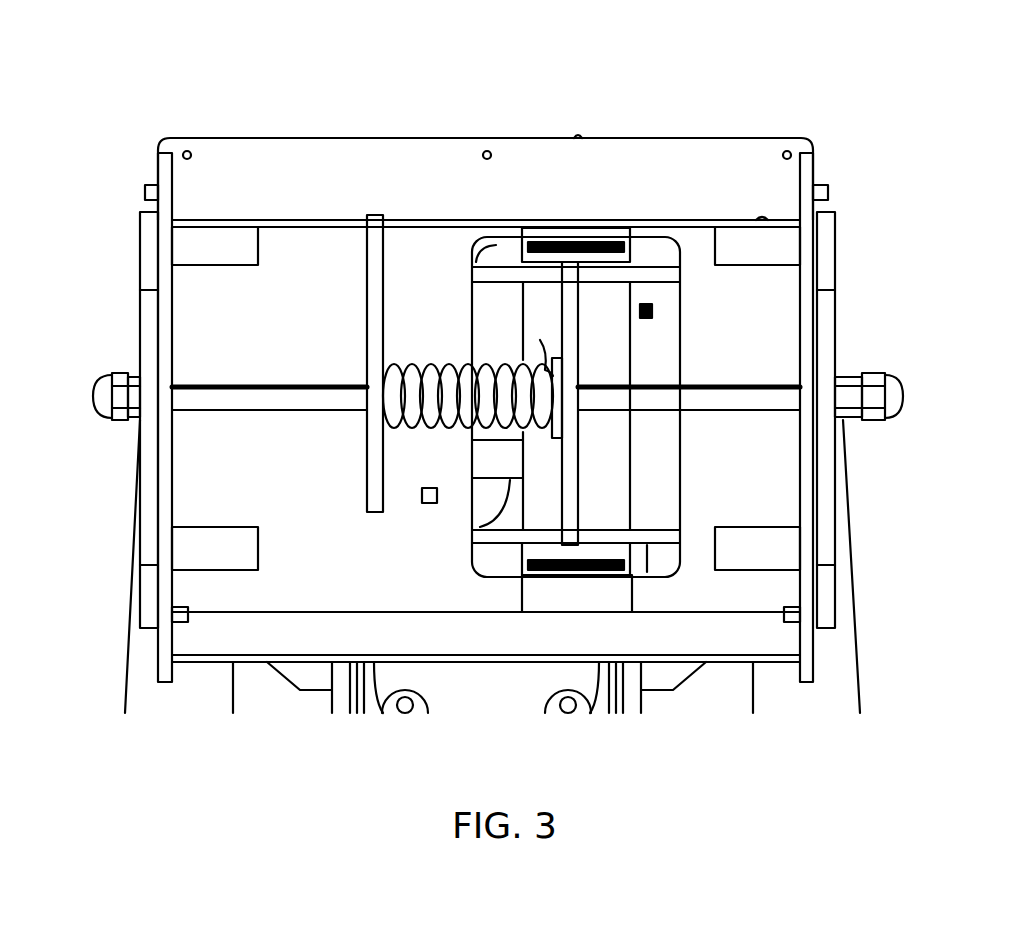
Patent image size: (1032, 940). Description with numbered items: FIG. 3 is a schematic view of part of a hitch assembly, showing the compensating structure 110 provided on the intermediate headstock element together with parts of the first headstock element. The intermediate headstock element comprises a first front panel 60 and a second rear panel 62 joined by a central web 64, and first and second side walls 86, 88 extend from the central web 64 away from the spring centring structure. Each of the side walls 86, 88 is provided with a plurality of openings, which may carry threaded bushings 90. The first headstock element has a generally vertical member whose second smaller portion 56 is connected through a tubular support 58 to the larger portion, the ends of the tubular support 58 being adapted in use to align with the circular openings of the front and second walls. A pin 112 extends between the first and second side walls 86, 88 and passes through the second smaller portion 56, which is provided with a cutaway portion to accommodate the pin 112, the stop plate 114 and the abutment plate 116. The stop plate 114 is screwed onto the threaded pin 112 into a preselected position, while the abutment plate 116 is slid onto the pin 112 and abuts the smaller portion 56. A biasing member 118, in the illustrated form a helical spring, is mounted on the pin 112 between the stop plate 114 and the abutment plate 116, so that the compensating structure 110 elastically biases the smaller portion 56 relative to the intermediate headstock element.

The compensating structure 110 is at (618, 115).
The first front panel 60 is at (270, 176).
The second rear panel 62 is at (258, 637).
The central web 64 is at (560, 600).
The second smaller portion 56 is at (572, 470).
The tubular support 58 is at (610, 505).
The first side wall 86 is at (825, 318).
The second side wall 88 is at (142, 323).
The threaded bushing 90 is at (212, 540).
The pin 112 is at (278, 400).
The stop plate 114 is at (375, 494).
The abutment plate 116 is at (553, 374).
The biasing member 118 is at (420, 366).